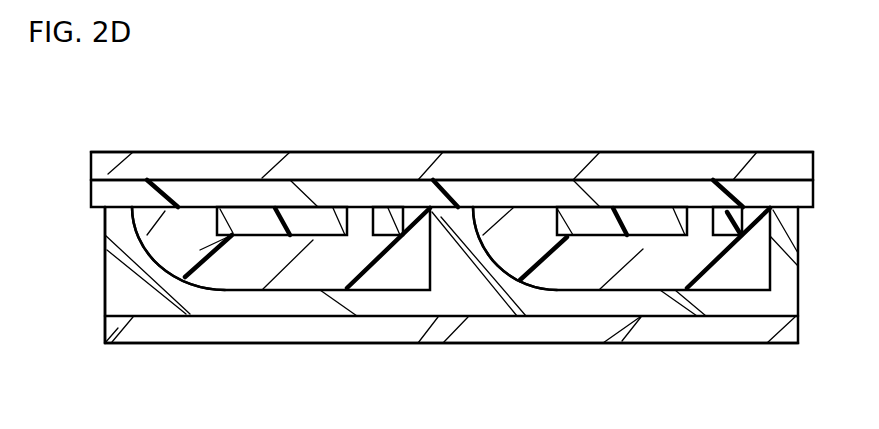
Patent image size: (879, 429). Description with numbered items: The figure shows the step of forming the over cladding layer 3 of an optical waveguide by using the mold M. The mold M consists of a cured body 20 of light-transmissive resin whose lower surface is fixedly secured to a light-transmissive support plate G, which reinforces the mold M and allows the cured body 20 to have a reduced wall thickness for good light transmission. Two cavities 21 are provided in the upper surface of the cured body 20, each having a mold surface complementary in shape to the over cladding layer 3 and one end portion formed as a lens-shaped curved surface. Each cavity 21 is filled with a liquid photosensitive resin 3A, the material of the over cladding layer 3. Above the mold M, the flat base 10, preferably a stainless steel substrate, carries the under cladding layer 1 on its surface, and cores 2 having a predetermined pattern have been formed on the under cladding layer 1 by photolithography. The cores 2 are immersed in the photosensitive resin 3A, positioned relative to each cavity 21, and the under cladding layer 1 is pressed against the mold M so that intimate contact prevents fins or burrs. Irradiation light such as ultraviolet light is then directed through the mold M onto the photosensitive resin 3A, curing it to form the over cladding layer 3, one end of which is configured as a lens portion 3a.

The mold M is at (100, 263).
The under cladding layer 1 is at (197, 195).
The base 10 is at (147, 158).
The cores 2 is at (388, 222).
The over cladding layer 3 is at (451, 305).
The photosensitive resin 3A is at (300, 275).
The lens portion 3a is at (162, 248).
The cured body of light-transmissive resin 20 is at (459, 303).
The cavities 21 is at (377, 277).
The light-transmissive support plate G is at (128, 328).